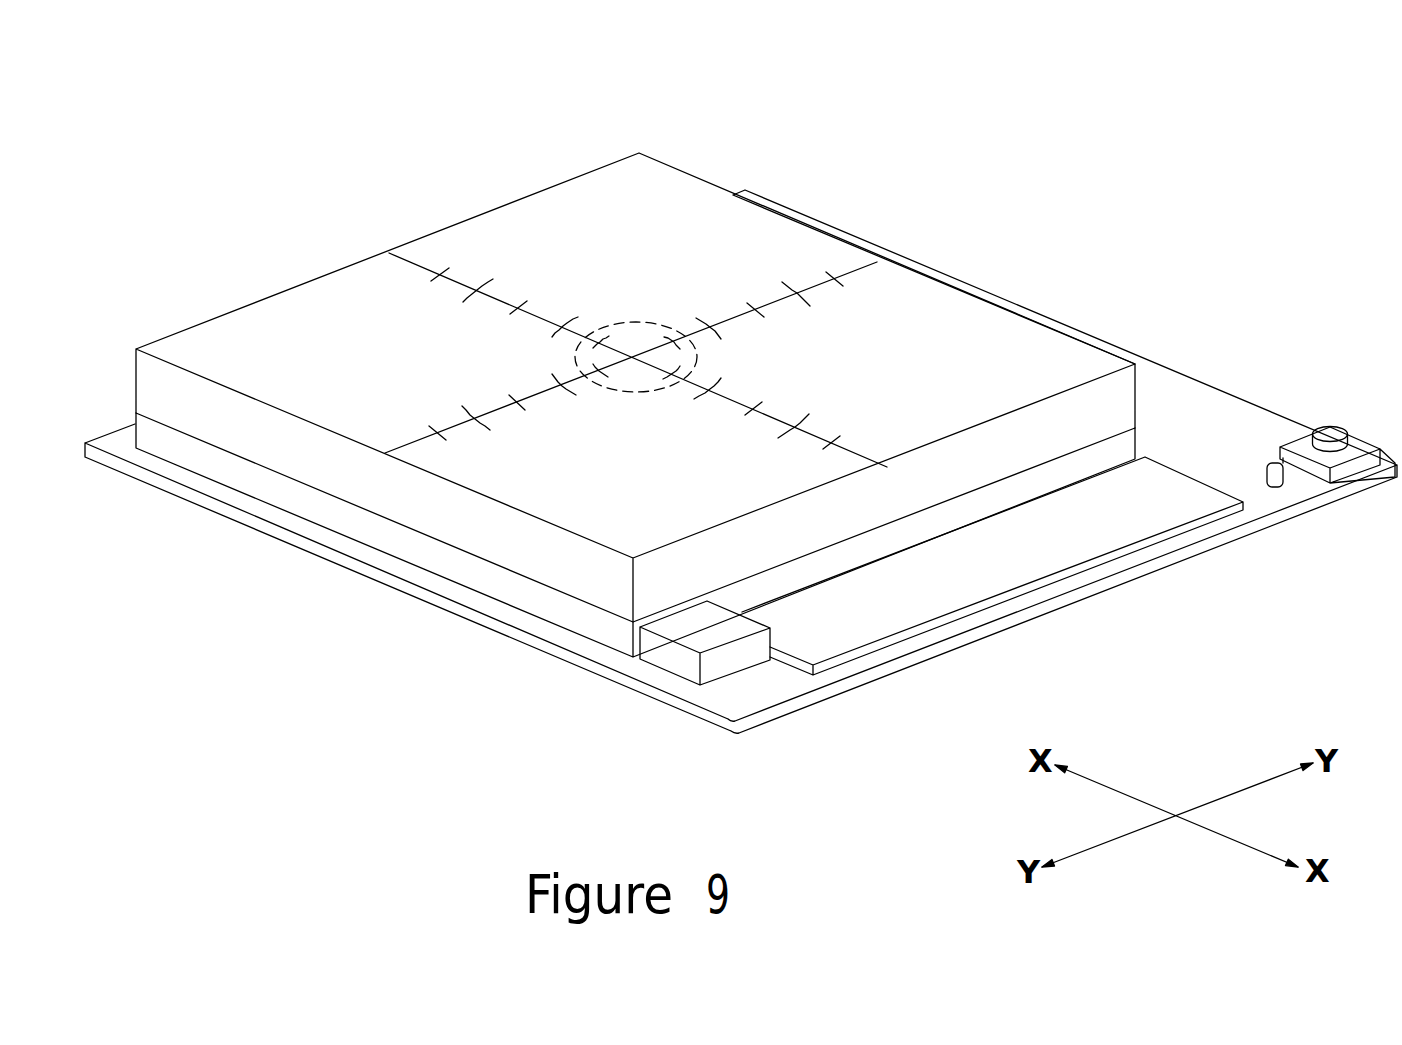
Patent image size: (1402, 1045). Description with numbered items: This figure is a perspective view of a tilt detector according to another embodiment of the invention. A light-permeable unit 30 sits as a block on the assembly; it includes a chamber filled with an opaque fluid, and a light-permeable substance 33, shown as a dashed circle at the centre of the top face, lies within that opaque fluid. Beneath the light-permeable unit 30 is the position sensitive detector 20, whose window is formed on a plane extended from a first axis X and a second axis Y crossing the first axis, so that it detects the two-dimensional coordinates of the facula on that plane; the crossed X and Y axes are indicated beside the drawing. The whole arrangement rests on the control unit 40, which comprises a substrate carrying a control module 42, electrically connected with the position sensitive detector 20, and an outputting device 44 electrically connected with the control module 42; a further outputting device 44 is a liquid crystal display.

The position sensitive detector 20 is at (403, 543).
The light-permeable unit 30 is at (558, 250).
The light-permeable substance 33 is at (650, 322).
The control unit 40 is at (740, 700).
The control module 42 is at (678, 662).
The outputting device 44 is at (1118, 500).